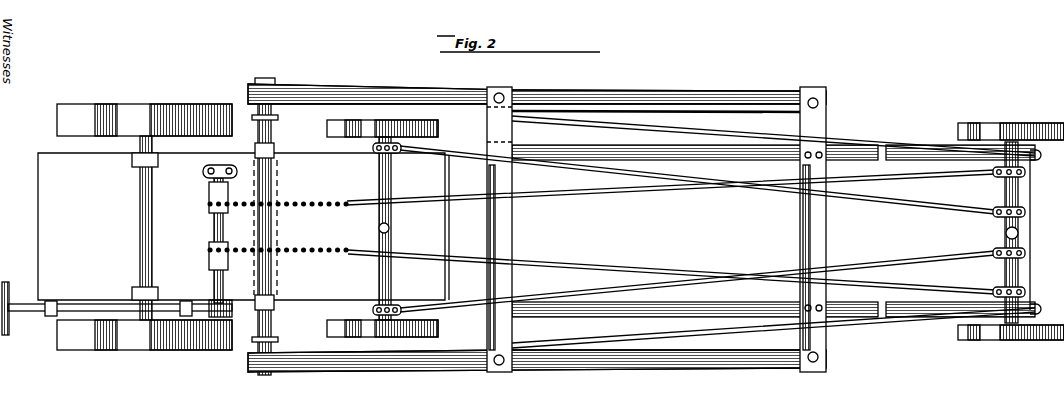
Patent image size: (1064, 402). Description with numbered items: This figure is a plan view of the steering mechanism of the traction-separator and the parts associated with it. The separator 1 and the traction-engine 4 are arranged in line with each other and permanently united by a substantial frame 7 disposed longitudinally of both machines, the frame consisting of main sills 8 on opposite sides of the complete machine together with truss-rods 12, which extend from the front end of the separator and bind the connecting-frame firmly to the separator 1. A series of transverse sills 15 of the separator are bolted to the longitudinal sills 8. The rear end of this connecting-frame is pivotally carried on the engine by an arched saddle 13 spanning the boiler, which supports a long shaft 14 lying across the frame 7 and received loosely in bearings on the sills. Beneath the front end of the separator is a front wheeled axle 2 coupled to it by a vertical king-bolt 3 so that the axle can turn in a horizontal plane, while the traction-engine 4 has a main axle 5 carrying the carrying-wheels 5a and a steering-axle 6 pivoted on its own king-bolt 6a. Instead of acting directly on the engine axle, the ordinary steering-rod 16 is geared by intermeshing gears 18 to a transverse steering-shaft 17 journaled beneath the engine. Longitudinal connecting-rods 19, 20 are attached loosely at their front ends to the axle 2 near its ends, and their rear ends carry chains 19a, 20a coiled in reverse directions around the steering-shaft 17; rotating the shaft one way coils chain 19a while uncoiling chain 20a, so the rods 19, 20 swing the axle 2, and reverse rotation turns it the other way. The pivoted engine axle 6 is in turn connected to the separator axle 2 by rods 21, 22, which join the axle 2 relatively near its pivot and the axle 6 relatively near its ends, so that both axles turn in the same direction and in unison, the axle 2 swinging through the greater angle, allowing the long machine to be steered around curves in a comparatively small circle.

The separator 1 is at (773, 231).
The front wheeled axle 2 is at (1007, 193).
The king-bolt 3 is at (1006, 233).
The traction-engine 4 is at (243, 226).
The main axle 5 is at (153, 228).
The carrying-wheels 5a is at (169, 113).
The steering-axle 6 is at (378, 190).
The king-bolt 6a is at (390, 229).
The frame 7 is at (635, 94).
The main sills 8 is at (468, 92).
The truss-rods 12 is at (572, 120).
The saddle 13 is at (275, 151).
The long shaft 14 is at (272, 286).
The transverse sills 15 is at (512, 239).
The steering-rod 16 is at (32, 304).
The transverse steering-shaft 17 is at (212, 244).
The intermeshing gears 18 is at (212, 300).
The longitudinal connecting-rod 19 is at (608, 190).
The chain 19a is at (306, 202).
The longitudinal connecting-rod 20 is at (612, 270).
The chain 20a is at (328, 253).
The rod 21 is at (653, 176).
The rod 22 is at (640, 284).